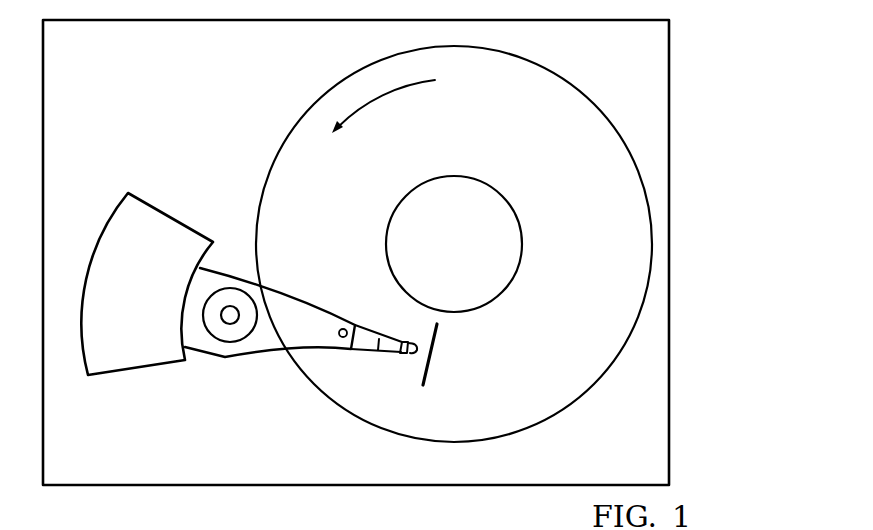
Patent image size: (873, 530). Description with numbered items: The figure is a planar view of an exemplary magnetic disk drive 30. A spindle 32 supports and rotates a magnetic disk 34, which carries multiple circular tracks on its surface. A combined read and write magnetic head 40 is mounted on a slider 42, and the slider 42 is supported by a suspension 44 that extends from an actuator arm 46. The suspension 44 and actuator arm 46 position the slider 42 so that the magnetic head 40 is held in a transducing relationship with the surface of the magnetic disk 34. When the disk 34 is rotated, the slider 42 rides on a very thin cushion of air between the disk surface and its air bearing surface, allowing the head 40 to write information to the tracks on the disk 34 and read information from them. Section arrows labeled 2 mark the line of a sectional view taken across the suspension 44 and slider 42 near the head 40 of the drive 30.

The magnetic disk drive 30 is at (689, 21).
The spindle 32 is at (477, 176).
The magnetic disk 34 is at (550, 246).
The magnetic head 40 is at (410, 335).
The slider 42 is at (404, 356).
The suspension 44 is at (362, 351).
The actuator arm 46 is at (274, 289).
The section line for FIG. 2 is at (450, 337).